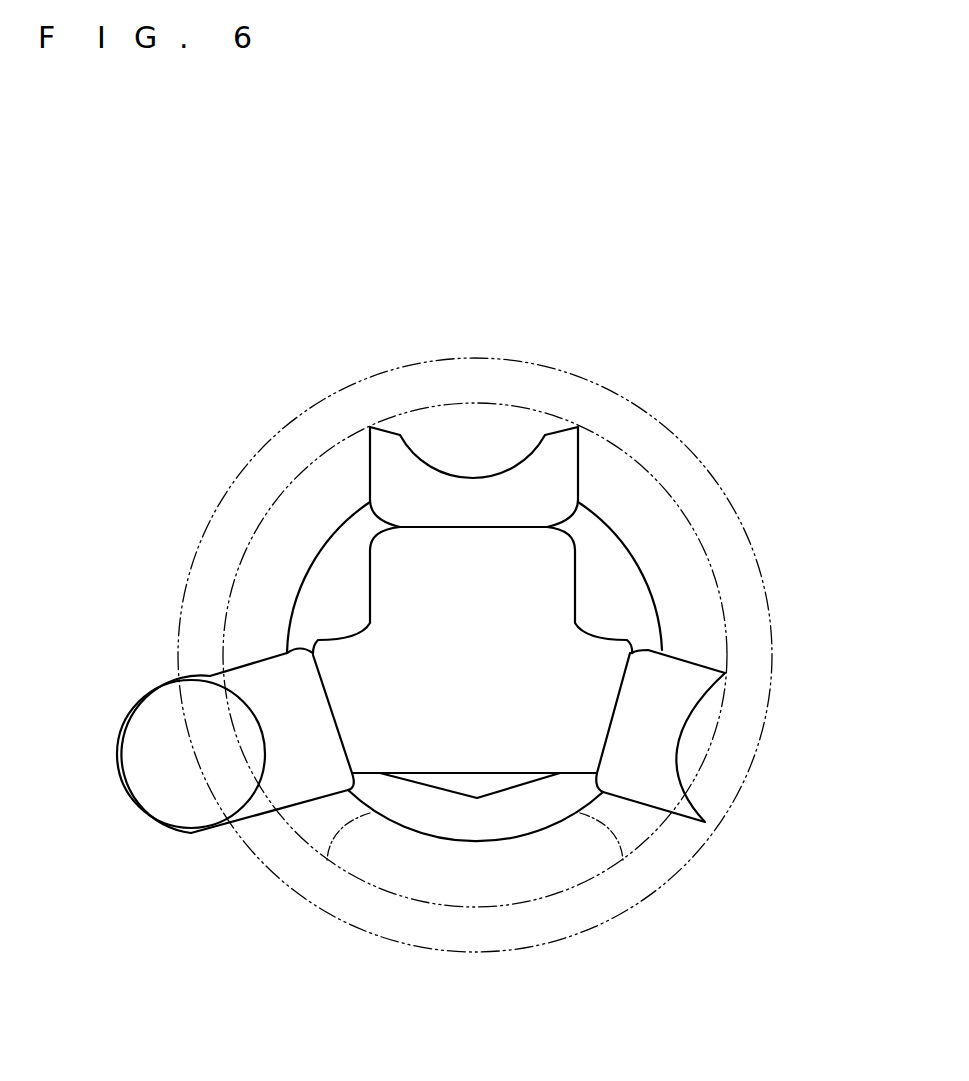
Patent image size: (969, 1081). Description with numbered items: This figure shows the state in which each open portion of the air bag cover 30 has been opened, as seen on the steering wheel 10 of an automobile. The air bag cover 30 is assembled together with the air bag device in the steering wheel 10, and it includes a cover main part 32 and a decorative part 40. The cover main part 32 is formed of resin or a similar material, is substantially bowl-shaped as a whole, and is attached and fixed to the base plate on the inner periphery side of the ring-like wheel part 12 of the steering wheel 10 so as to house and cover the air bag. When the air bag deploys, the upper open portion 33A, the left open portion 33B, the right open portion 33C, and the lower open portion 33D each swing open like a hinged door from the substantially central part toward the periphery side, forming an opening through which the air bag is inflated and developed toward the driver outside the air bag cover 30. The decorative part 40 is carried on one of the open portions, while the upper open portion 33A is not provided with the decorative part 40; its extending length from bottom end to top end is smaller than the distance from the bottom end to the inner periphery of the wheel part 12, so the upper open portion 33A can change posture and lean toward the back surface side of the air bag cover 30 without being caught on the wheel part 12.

The steering wheel 10 is at (498, 360).
The wheel part 12 is at (720, 487).
The air bag cover 30 is at (652, 592).
The cover main part 32 is at (595, 532).
The upper open portion 33A is at (387, 448).
The left open portion 33B is at (270, 795).
The right open portion 33C is at (677, 685).
The lower open portion 33D is at (470, 783).
The decorative part 40 is at (158, 790).